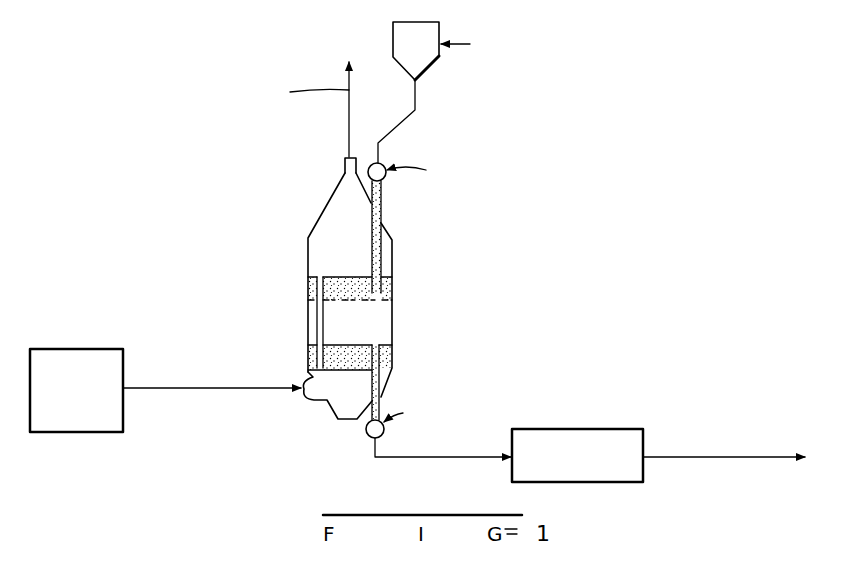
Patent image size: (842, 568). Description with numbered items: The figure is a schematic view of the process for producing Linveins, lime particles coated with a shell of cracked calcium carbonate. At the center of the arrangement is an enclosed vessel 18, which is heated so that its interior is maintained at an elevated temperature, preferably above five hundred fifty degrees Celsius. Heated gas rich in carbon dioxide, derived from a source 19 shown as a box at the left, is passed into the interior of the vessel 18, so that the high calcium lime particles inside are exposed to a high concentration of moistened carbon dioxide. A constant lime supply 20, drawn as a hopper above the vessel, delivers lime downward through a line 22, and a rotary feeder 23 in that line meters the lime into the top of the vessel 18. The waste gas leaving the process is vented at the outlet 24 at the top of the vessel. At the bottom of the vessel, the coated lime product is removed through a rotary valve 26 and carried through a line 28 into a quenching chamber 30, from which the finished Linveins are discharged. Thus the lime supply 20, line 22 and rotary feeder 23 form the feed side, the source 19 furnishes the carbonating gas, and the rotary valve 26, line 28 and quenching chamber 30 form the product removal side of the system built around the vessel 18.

The enclosed vessel 18 is at (393, 266).
The source 19 is at (60, 349).
The lime supply 20 is at (441, 61).
The line 22 is at (398, 122).
The rotary feeder 23 is at (384, 180).
The waste gas vent 24 is at (345, 158).
The rotary valve 26 is at (368, 436).
The line 28 is at (448, 458).
The quenching chamber 30 is at (582, 429).